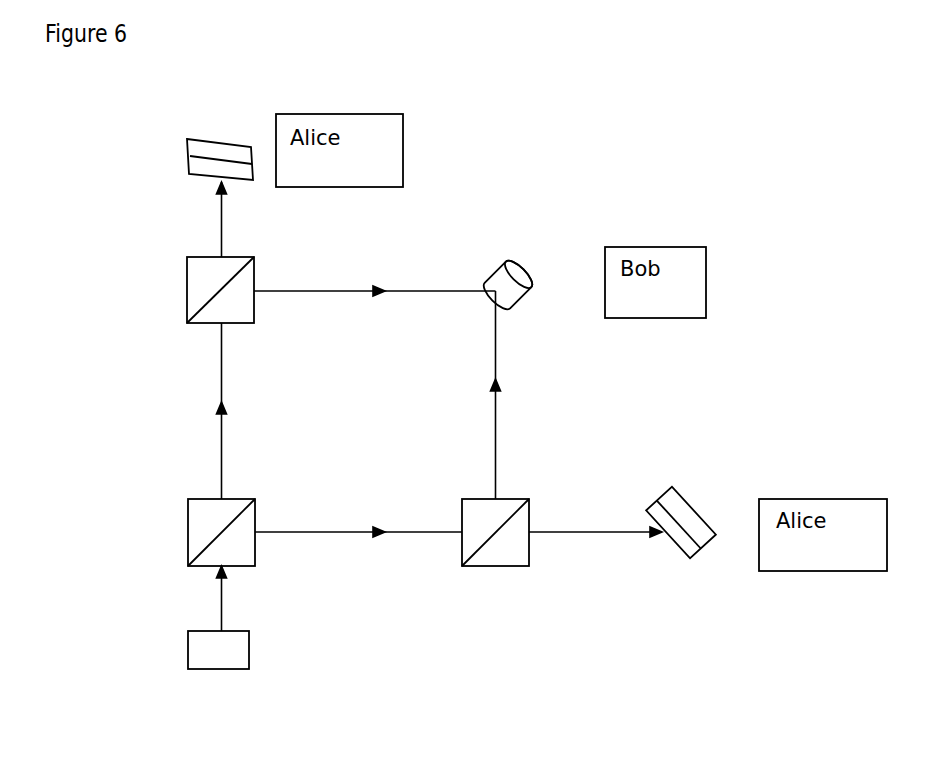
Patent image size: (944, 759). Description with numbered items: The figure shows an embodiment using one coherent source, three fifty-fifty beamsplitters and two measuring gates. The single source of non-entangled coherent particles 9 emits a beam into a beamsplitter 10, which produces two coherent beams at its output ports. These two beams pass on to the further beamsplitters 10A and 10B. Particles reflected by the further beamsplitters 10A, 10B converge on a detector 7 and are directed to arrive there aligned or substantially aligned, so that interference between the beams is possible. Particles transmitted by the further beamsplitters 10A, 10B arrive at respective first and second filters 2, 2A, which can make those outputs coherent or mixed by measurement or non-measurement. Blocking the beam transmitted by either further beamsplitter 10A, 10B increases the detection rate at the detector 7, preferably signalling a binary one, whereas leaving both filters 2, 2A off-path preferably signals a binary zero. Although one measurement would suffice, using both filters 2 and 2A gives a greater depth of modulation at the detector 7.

The first filter 2 is at (220, 135).
The second filter 2A is at (695, 541).
The detector 7 is at (525, 279).
The source of non-entangled coherent particles 9 is at (218, 672).
The beamsplitter 10 is at (191, 532).
The further beamsplitter 10A is at (186, 290).
The further beamsplitter 10B is at (495, 557).